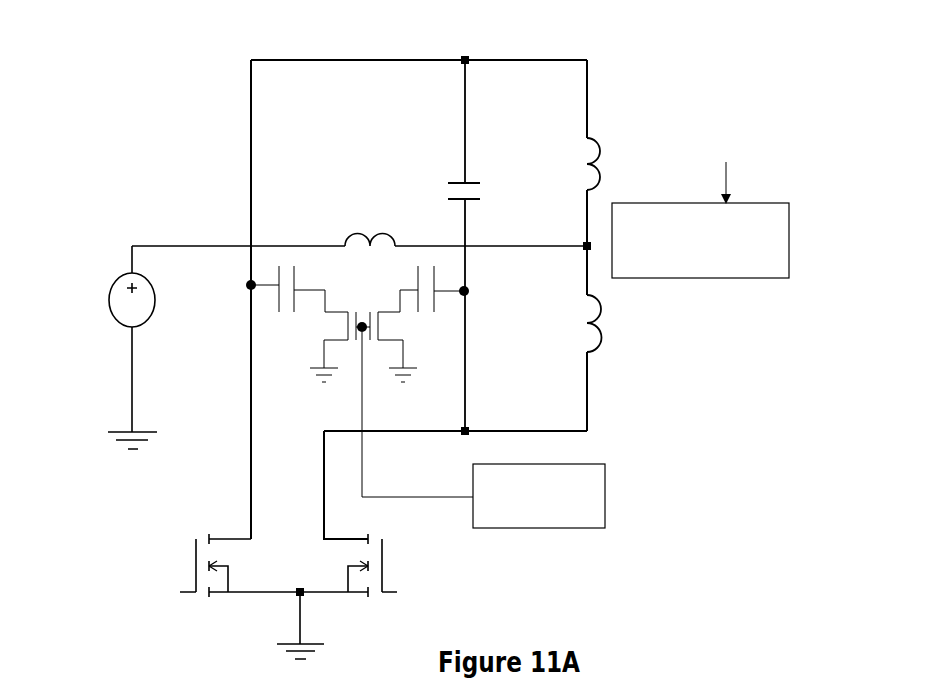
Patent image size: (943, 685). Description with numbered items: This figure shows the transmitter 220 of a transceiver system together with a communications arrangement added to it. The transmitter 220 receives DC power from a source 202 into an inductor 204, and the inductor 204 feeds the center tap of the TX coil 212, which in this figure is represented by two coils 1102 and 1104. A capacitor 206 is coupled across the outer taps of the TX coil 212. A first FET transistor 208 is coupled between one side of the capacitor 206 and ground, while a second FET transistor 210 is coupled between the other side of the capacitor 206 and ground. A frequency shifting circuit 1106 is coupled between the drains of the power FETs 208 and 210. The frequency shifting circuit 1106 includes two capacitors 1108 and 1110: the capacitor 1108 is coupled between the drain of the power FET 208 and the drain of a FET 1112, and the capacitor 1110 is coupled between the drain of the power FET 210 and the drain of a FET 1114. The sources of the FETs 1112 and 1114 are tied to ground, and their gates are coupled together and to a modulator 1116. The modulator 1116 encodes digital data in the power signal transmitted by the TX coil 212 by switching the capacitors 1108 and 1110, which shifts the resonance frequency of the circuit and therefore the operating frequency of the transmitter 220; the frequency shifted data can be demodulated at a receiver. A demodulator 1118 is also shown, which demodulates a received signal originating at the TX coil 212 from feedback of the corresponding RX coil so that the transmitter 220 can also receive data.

The source 202 is at (113, 292).
The inductor 204 is at (350, 220).
The capacitor 206 is at (440, 190).
The first FET transistor 208 is at (173, 552).
The second FET transistor 210 is at (398, 558).
The TX coil 212 is at (588, 112).
The transmitter 220 is at (278, 88).
The coil 1102 is at (580, 165).
The coil 1104 is at (590, 338).
The frequency shifting circuit 1106 is at (273, 336).
The capacitor 1108 is at (278, 266).
The capacitor 1110 is at (433, 273).
The FET 1112 is at (337, 320).
The FET 1114 is at (397, 320).
The modulator 1116 is at (592, 464).
The demodulator 1118 is at (785, 203).